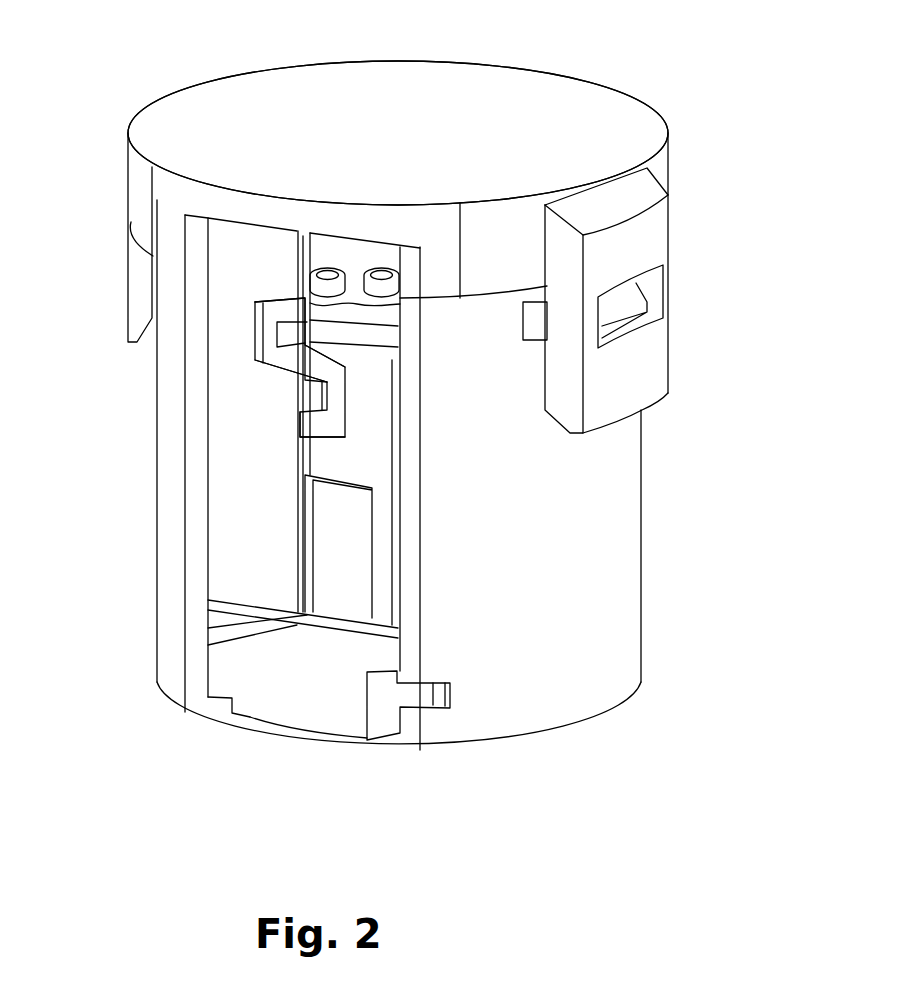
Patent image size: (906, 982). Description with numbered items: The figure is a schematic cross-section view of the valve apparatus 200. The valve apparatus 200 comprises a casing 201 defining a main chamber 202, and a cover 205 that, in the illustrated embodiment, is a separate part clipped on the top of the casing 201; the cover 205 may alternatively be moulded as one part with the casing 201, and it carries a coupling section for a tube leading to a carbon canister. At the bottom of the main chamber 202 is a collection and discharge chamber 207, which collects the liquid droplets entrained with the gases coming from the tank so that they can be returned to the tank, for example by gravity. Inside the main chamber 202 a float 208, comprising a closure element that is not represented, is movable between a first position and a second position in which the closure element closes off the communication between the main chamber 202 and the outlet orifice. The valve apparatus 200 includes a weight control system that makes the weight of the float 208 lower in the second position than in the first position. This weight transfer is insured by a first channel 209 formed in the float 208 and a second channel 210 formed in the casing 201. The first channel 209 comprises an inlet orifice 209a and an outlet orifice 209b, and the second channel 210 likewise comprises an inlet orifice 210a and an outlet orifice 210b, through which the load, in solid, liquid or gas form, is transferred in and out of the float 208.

The valve apparatus 200 is at (603, 63).
The casing 201 is at (237, 552).
The main chamber 202 is at (400, 280).
The cover 205 is at (253, 120).
The collection and discharge chamber 207 is at (307, 692).
The float 208 is at (373, 553).
The first channel 209 is at (357, 407).
The inlet orifice 209a is at (287, 380).
The outlet orifice 209b is at (295, 427).
The second channel 210 is at (318, 316).
The inlet orifice 210a is at (280, 297).
The outlet orifice 210b is at (280, 358).